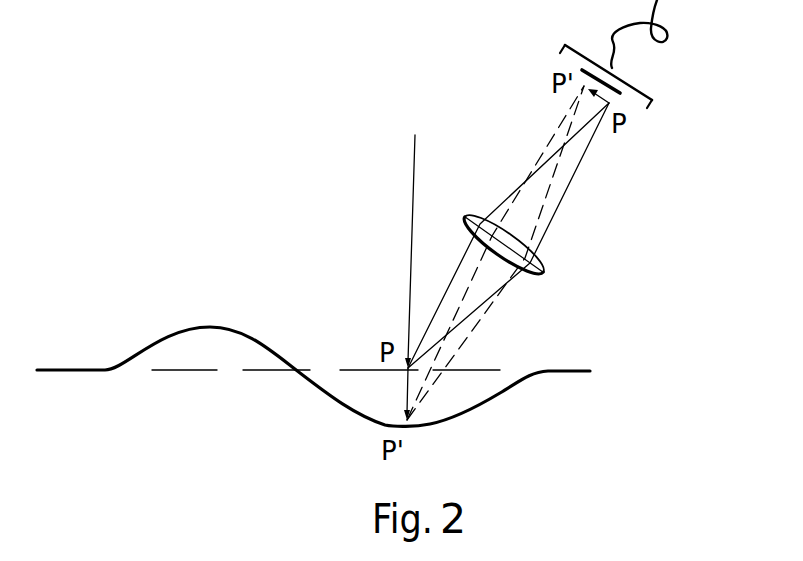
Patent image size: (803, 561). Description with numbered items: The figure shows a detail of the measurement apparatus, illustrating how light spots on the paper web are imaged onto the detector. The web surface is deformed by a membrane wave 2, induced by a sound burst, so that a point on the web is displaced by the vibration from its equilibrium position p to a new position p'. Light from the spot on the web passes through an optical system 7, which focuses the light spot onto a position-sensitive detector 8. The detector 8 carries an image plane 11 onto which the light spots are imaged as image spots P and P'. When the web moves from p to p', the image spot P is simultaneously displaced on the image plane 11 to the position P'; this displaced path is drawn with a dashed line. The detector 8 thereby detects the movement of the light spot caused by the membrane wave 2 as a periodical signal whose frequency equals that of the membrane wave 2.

The membrane wave 2 is at (233, 312).
The optical system 7 is at (535, 262).
The position-sensitive detector 8 is at (556, 53).
The image plane 11 is at (622, 95).